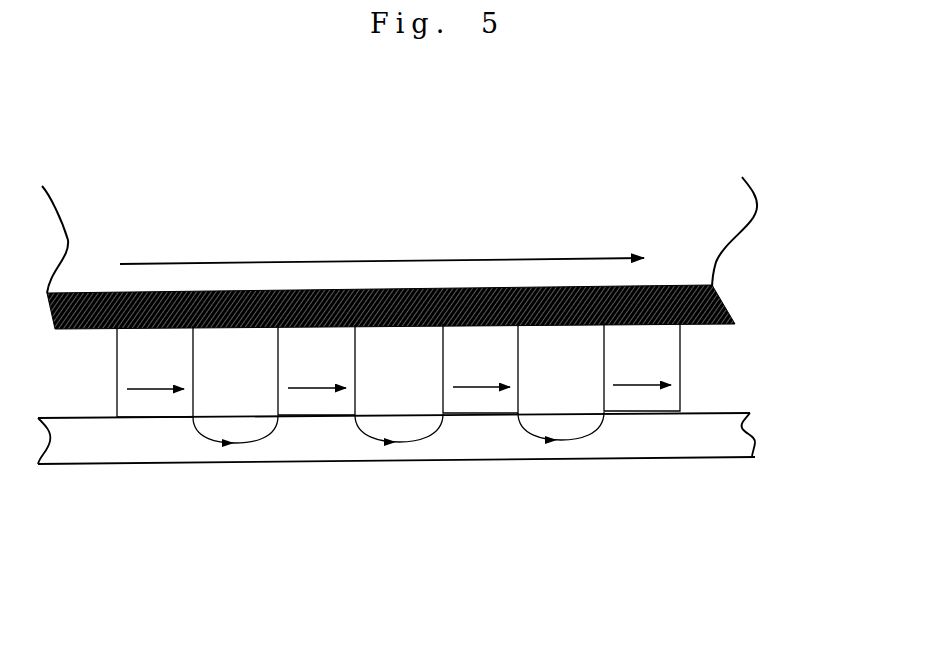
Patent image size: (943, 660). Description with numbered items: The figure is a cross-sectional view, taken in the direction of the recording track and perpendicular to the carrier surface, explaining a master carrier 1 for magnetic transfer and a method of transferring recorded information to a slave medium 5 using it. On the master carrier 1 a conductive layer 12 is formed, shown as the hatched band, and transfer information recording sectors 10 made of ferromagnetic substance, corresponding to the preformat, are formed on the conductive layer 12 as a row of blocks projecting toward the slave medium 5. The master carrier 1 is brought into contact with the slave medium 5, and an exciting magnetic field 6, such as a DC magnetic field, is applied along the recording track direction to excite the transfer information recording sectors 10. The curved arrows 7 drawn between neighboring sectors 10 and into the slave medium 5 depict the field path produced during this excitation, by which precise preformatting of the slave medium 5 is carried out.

The master carrier for magnetic transfer 1 is at (118, 181).
The slave medium 5 is at (733, 440).
The exciting magnetic field 6 is at (378, 263).
The air flow curving between nozzle units 7 is at (242, 444).
The transfer information recording sectors 10 is at (662, 353).
The conductive layer 12 is at (720, 302).